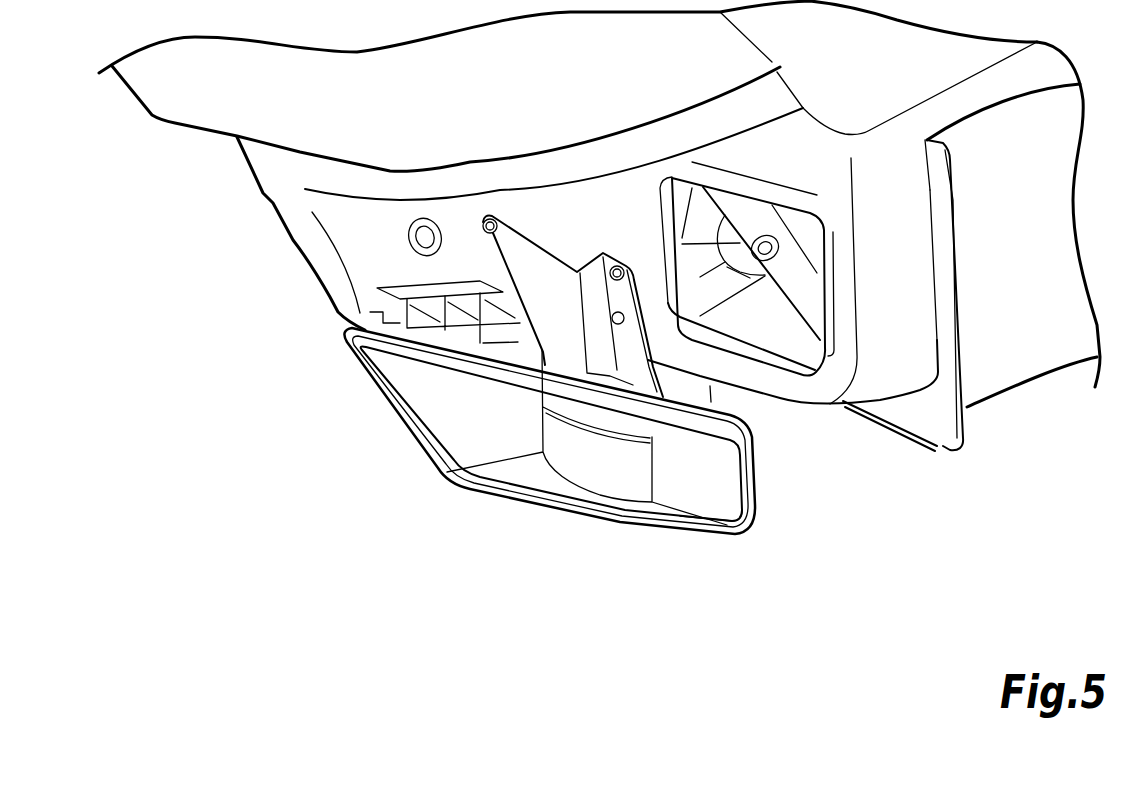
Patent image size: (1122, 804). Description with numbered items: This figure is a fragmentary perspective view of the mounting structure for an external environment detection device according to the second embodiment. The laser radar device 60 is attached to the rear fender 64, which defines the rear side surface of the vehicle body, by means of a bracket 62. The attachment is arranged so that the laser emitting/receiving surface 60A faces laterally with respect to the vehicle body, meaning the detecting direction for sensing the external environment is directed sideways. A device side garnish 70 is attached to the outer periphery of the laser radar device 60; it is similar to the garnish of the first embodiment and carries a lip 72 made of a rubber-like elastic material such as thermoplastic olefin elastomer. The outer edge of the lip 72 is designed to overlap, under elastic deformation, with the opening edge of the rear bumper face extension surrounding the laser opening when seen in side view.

The laser radar device 60 is at (579, 456).
The laser emitting/receiving surface 60A is at (587, 478).
The bracket 62 is at (553, 280).
The rear fender 64 is at (470, 252).
The device side garnish 70 is at (724, 478).
The lip 72 is at (743, 525).